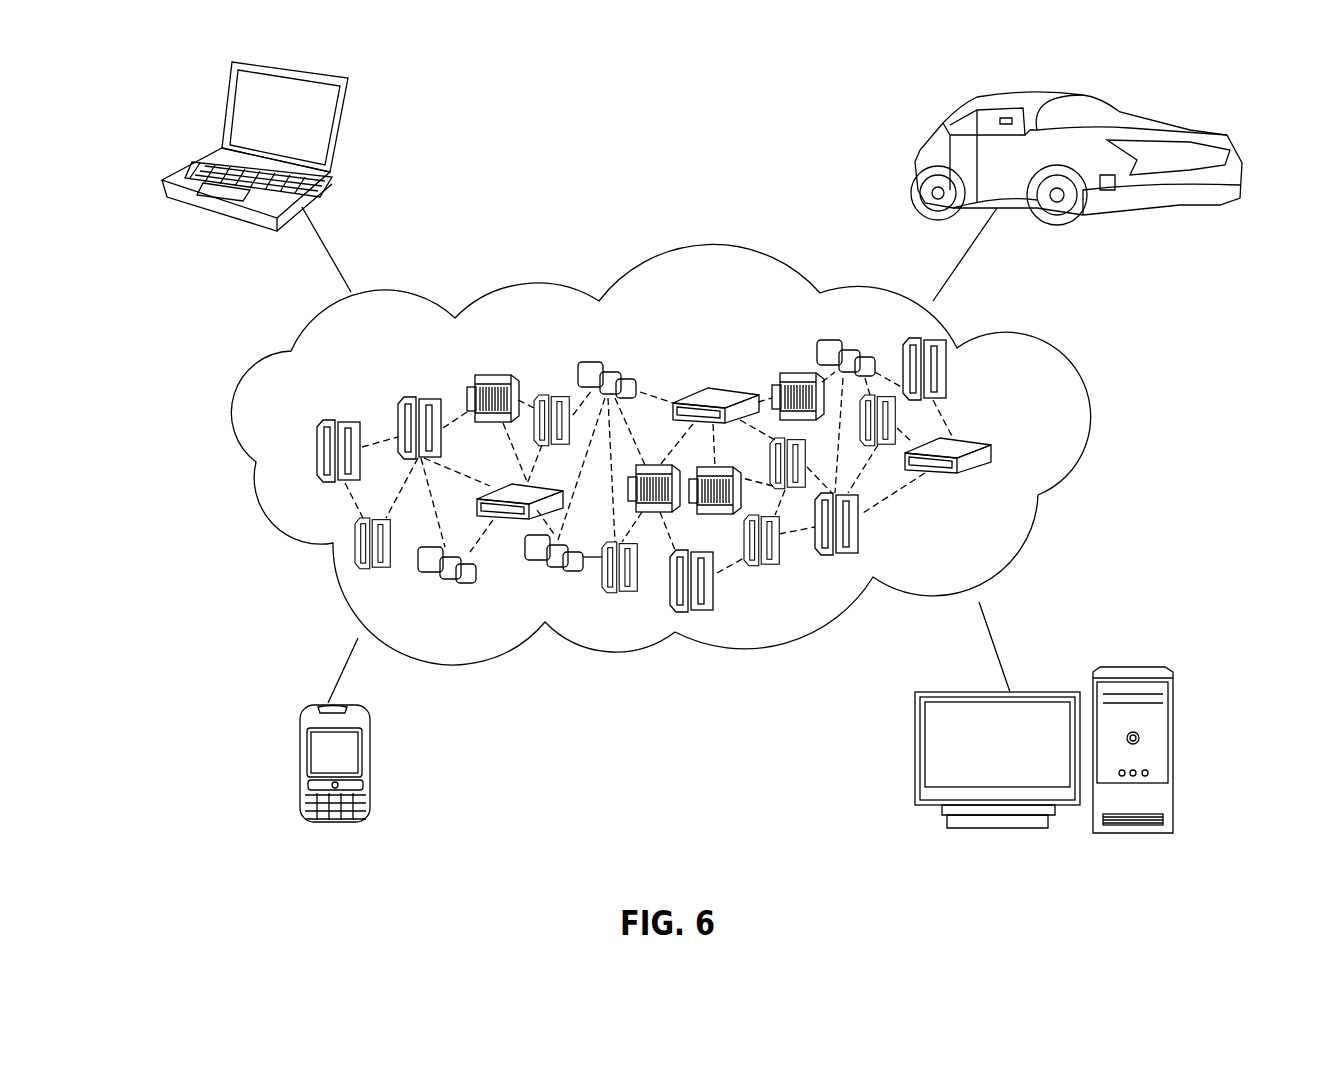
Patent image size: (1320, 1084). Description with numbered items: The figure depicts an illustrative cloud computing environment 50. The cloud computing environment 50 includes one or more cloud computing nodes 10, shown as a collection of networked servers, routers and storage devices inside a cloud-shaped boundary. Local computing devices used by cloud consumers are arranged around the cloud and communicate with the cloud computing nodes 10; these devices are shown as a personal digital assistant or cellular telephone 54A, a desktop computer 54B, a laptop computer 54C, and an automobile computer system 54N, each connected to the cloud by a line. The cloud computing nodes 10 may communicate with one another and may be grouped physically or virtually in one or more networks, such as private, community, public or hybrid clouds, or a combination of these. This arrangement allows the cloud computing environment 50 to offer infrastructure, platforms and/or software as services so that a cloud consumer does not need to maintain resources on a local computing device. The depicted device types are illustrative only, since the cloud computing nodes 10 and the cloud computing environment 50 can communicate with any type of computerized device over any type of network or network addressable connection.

The laptop computer 54C is at (343, 130).
The automobile computer system 54N is at (925, 142).
The cloud computing environment 50 is at (1053, 365).
The cloud computing nodes 10 is at (1030, 453).
The personal digital assistant or cellular telephone 54A is at (300, 767).
The desktop computer 54B is at (1138, 667).